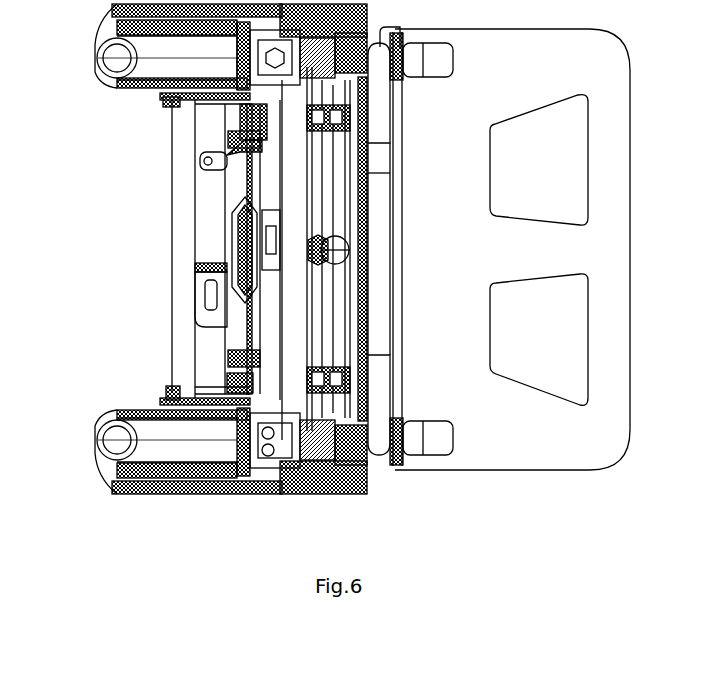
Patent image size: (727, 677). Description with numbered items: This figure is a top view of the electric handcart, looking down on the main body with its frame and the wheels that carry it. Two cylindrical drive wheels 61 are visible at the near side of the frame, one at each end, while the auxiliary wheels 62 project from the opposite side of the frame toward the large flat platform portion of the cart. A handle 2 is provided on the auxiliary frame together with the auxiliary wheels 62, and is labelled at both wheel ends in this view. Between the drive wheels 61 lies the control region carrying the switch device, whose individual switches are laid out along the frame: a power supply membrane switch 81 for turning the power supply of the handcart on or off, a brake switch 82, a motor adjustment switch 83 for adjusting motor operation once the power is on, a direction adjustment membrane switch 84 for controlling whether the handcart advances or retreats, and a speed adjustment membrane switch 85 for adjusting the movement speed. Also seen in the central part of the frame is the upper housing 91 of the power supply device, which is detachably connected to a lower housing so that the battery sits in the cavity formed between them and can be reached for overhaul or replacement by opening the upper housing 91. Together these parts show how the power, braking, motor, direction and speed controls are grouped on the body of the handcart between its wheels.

The handle 2 is at (150, 84).
The drive wheels 61 is at (113, 12).
The auxiliary wheels 62 is at (432, 55).
The power supply membrane switch 81 is at (185, 113).
The brake switch 82 is at (230, 124).
The motor adjustment switch 83 is at (360, 476).
The direction adjustment membrane switch 84 is at (313, 477).
The speed adjustment membrane switch 85 is at (262, 465).
The upper housing 91 is at (257, 160).